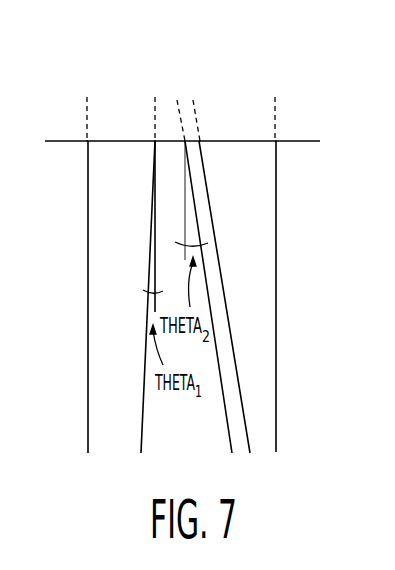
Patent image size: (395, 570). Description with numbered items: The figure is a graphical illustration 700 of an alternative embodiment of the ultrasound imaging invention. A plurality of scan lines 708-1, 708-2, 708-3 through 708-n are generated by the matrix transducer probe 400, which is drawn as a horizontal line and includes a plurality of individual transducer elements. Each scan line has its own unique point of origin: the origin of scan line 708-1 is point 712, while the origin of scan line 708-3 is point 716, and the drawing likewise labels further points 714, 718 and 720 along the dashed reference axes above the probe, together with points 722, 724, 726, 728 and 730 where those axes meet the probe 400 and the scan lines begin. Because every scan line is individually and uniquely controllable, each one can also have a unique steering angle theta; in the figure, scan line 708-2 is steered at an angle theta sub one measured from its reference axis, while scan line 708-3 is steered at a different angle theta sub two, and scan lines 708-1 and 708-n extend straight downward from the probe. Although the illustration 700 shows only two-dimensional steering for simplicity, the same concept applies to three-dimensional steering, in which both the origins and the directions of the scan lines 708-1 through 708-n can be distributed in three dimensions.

The graphical illustration 700 is at (55, 63).
The matrix transducer probe 400 is at (307, 142).
The point 712 is at (86, 98).
The second normal reference axis 714 is at (155, 98).
The point 716 is at (177, 99).
The fourth reference axis 718 is at (193, 99).
The nth normal reference axis 720 is at (275, 97).
The first intersection point 722 is at (87, 141).
The second intersection point 724 is at (155, 141).
The third intersection point 726 is at (185, 145).
The fourth intersection point 728 is at (200, 141).
The nth intersection point 730 is at (277, 141).
The scan line 708-1 is at (87, 187).
The scan line 708-2 is at (144, 404).
The scan line 708-3 is at (229, 439).
The scan line 708-n is at (276, 188).